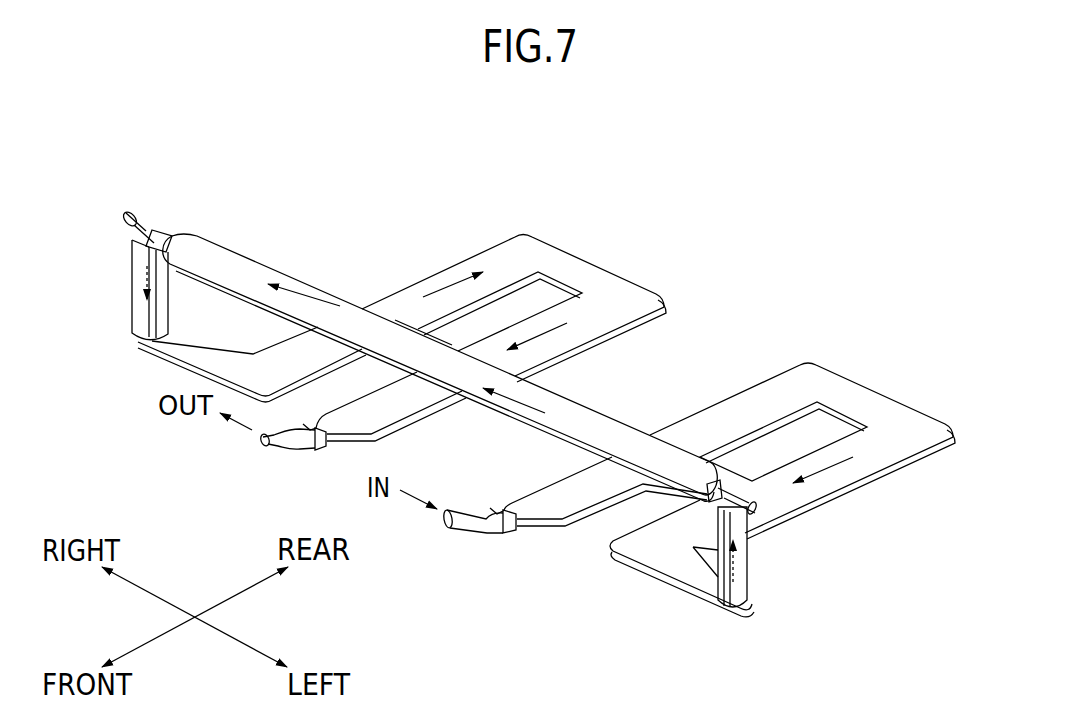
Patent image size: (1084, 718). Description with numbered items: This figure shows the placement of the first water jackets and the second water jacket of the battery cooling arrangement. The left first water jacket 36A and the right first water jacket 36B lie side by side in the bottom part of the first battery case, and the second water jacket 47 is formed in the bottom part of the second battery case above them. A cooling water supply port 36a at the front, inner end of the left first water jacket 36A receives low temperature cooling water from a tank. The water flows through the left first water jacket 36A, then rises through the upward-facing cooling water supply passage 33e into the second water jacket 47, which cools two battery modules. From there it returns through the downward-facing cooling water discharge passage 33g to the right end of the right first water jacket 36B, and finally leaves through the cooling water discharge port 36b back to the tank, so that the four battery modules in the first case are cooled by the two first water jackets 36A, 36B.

The second water jacket 47 is at (320, 281).
The left first water jacket 36A is at (905, 392).
The right first water jacket 36B is at (621, 265).
The cooling water supply port 36a is at (463, 535).
The cooling water discharge port 36b is at (282, 449).
The cooling water discharge passage 33g is at (133, 285).
The cooling water supply passage 33e is at (742, 549).